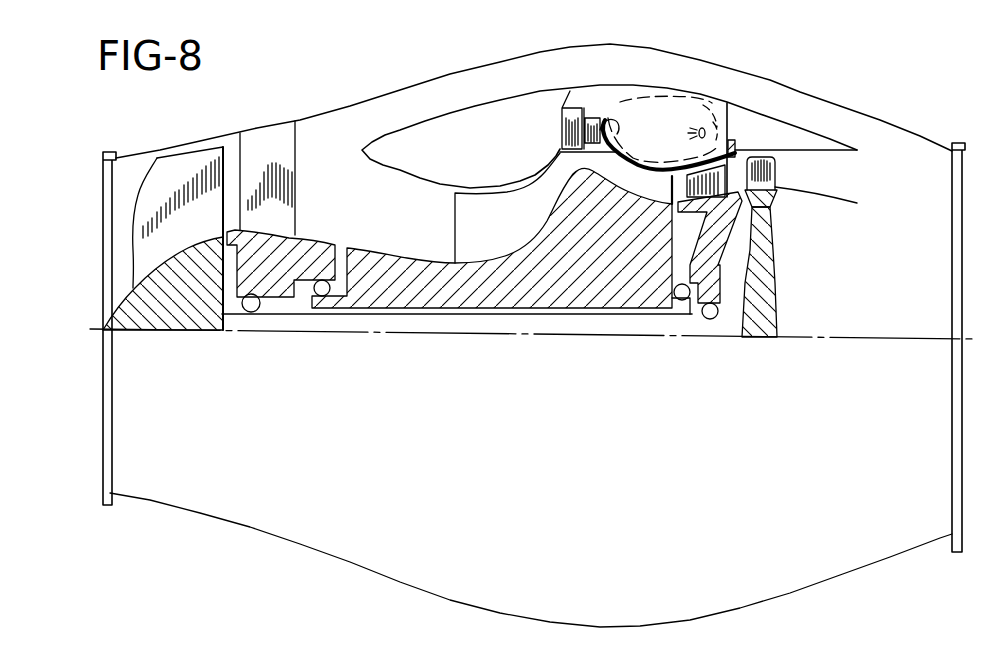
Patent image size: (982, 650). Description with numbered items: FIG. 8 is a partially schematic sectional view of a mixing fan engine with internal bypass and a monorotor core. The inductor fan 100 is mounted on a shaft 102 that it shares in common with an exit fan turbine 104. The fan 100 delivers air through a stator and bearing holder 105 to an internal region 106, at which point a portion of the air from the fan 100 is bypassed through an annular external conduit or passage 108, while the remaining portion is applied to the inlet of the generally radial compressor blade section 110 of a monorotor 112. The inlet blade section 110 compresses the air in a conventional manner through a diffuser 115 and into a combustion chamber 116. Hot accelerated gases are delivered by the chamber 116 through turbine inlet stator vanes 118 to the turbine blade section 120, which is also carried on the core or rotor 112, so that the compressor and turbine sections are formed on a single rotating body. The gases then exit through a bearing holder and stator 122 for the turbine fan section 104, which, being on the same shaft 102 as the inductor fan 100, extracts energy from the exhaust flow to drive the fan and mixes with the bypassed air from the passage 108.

The inductor fan 100 is at (143, 247).
The shaft 102 is at (488, 330).
The exit fan turbine 104 is at (760, 323).
The stator and bearing holder 105 is at (272, 140).
The internal region 106 is at (350, 127).
The annular external conduit or passage 108 is at (417, 98).
The generally radial compressor blade section 110 is at (475, 222).
The monorotor 112 is at (610, 303).
The diffuser 115 is at (560, 120).
The combustion chamber 116 is at (673, 122).
The turbine inlet stator vanes 118 is at (595, 110).
The turbine blade section 120 is at (635, 178).
The bearing holder and stator 122 is at (724, 170).